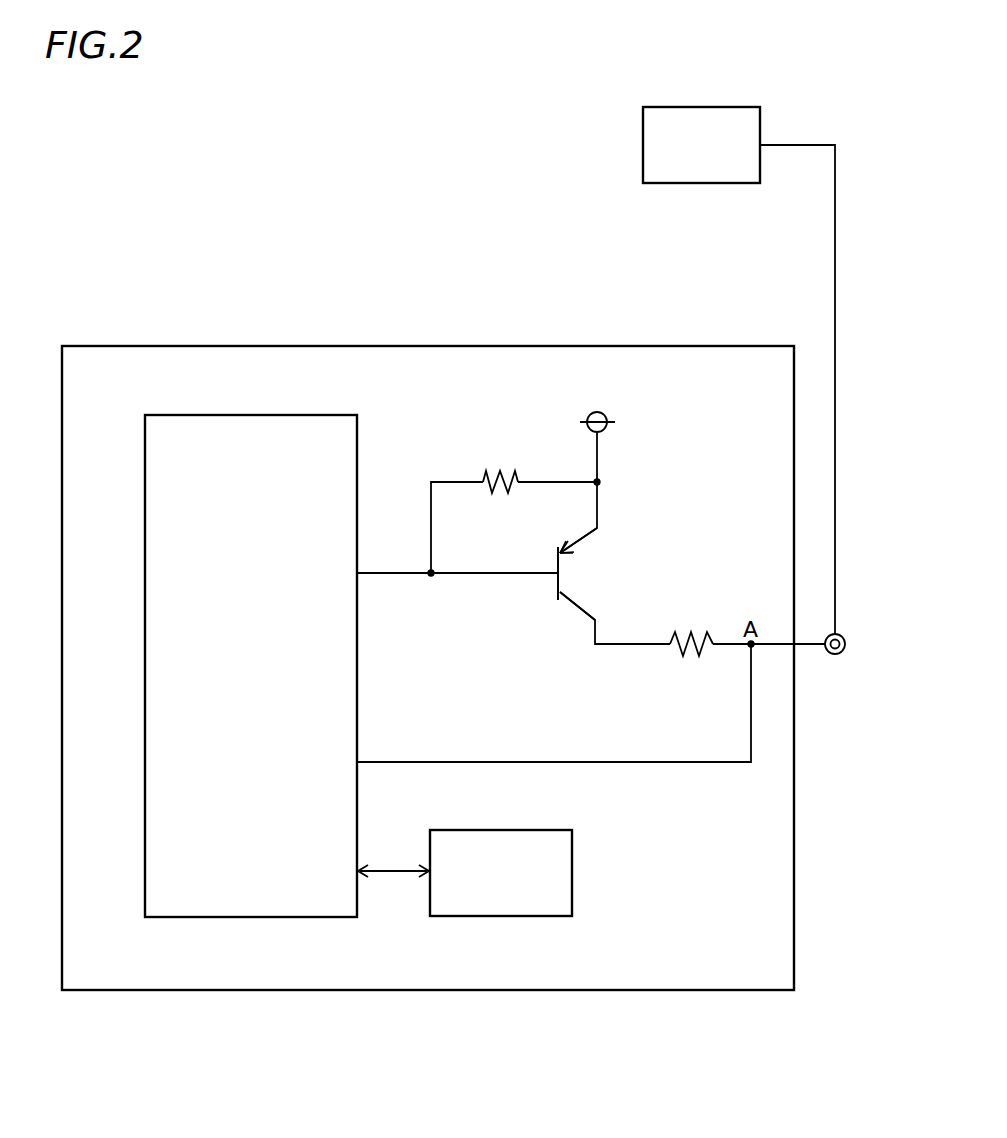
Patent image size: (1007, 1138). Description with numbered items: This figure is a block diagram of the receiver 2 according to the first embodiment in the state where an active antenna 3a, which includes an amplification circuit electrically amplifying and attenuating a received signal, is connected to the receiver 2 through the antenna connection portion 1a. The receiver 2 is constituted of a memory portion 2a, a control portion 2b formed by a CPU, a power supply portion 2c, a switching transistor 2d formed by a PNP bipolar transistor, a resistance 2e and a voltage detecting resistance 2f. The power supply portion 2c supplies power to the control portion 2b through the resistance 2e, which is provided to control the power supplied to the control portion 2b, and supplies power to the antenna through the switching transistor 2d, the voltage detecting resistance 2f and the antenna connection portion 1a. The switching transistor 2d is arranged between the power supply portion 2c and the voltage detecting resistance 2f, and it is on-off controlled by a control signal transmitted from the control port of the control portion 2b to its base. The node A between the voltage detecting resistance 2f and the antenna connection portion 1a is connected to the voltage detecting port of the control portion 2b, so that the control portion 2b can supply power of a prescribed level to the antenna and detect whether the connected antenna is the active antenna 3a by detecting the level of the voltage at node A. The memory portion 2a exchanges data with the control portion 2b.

The receiver 2 is at (406, 346).
The memory portion 2a is at (512, 916).
The control portion 2b is at (277, 917).
The power supply portion 2c is at (597, 412).
The switching transistor 2d is at (598, 575).
The resistance 2e is at (502, 470).
The voltage detecting resistance 2f is at (690, 632).
The active antenna 3a is at (748, 107).
The antenna connection portion 1a is at (835, 654).